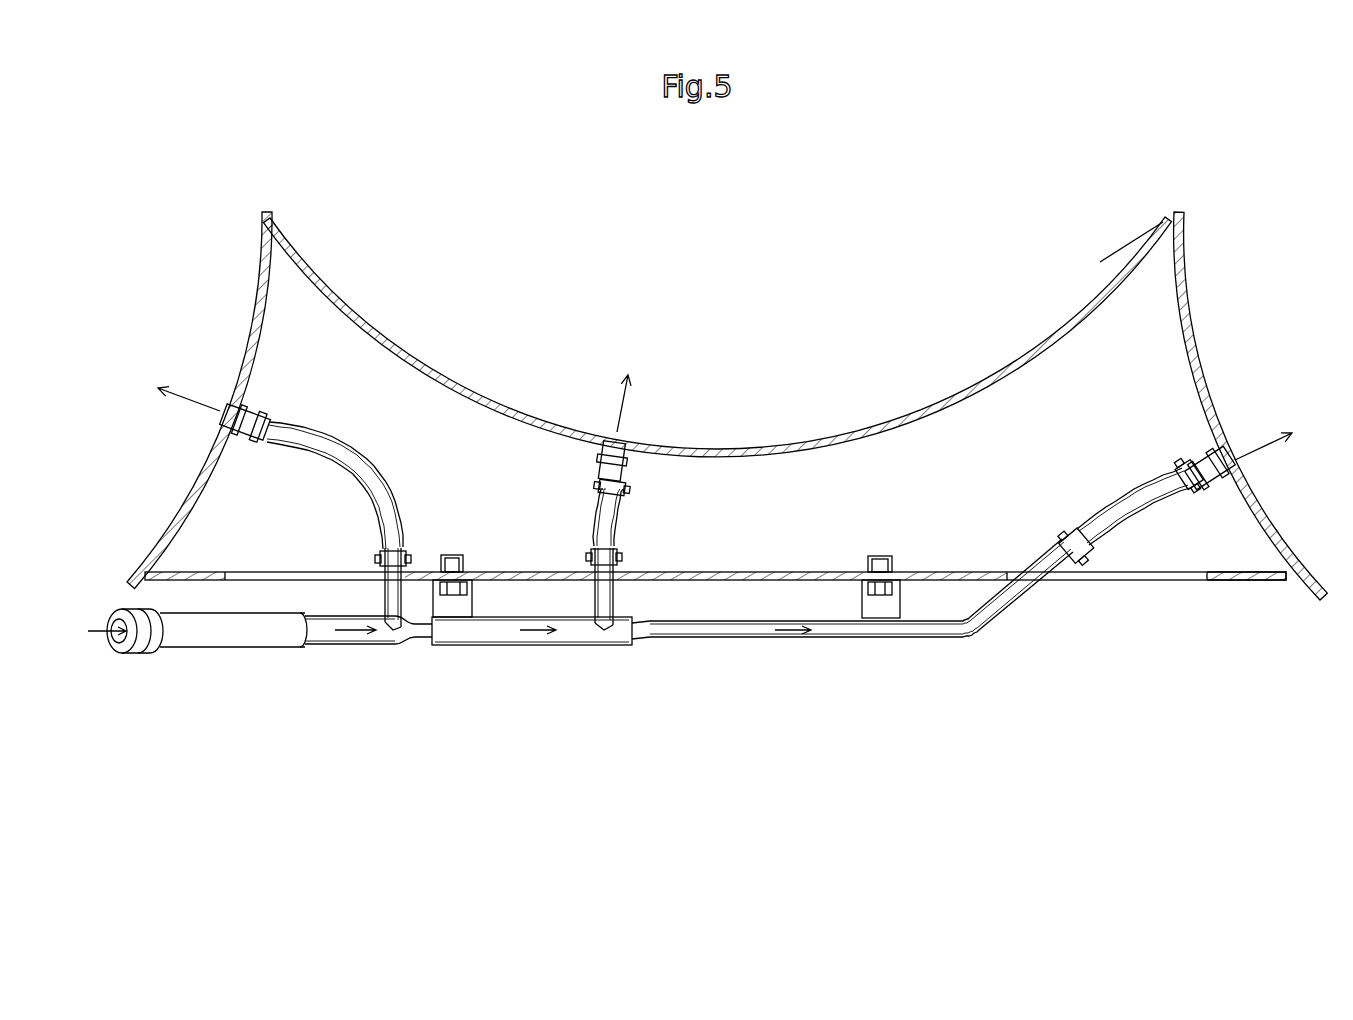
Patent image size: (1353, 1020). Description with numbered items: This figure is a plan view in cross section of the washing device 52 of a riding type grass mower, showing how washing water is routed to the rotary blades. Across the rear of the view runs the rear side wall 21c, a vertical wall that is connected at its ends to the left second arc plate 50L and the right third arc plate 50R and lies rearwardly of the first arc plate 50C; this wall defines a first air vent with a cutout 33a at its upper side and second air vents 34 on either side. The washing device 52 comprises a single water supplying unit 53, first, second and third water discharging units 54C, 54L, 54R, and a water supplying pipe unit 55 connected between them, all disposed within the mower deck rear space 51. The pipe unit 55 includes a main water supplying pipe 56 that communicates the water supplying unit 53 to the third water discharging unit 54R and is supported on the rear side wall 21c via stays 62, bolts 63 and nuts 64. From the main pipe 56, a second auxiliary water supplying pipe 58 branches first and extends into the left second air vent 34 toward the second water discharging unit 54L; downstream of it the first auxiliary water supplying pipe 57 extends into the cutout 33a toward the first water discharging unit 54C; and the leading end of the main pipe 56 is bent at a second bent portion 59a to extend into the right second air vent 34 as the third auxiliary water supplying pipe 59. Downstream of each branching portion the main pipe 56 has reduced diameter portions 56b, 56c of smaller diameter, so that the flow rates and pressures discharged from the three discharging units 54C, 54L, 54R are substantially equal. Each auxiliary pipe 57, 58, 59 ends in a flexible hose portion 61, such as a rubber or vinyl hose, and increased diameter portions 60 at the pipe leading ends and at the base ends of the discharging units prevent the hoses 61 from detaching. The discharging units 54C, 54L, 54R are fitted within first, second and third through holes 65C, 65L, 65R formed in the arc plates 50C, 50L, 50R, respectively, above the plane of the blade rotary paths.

The rear side wall 21c is at (1238, 582).
The cutout 33a is at (627, 575).
The second air vent 34 is at (245, 582).
The second arc plate 50L is at (180, 492).
The first arc plate 50C is at (864, 434).
The third arc plate 50R is at (1195, 372).
The mower deck rear space 51 is at (778, 534).
The washing device 52 is at (290, 676).
The water supplying unit 53 is at (124, 648).
The second water discharging unit 54L is at (236, 404).
The first water discharging unit 54C is at (600, 448).
The third water discharging unit 54R is at (1230, 478).
The water supplying pipe unit 55 is at (834, 671).
The main water supplying pipe 56 is at (533, 647).
The reduced diameter portion 56b is at (424, 641).
The reduced diameter portion 56c is at (637, 647).
The first auxiliary water supplying pipe 57 is at (616, 604).
The second auxiliary water supplying pipe 58 is at (384, 605).
The third auxiliary water supplying pipe 59 is at (1011, 624).
The second bent portion 59a is at (978, 640).
The increased diameter portion 60 is at (287, 443).
The flexible hose portion 61 is at (340, 444).
The stay 62 is at (430, 598).
The bolt 63 is at (468, 590).
The nut 64 is at (456, 560).
The second through hole 65L is at (228, 410).
The first through hole 65C is at (618, 442).
The third through hole 65R is at (1233, 460).